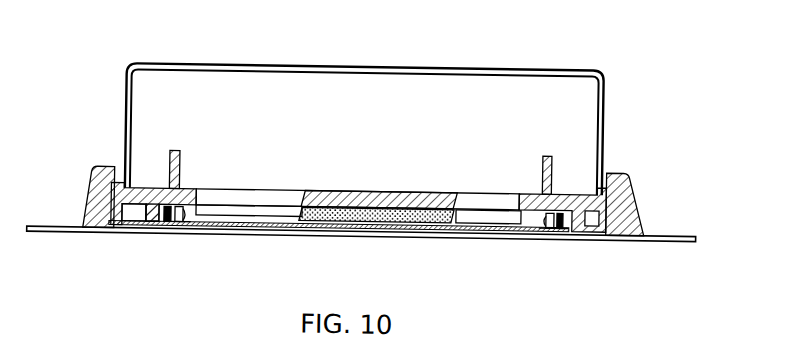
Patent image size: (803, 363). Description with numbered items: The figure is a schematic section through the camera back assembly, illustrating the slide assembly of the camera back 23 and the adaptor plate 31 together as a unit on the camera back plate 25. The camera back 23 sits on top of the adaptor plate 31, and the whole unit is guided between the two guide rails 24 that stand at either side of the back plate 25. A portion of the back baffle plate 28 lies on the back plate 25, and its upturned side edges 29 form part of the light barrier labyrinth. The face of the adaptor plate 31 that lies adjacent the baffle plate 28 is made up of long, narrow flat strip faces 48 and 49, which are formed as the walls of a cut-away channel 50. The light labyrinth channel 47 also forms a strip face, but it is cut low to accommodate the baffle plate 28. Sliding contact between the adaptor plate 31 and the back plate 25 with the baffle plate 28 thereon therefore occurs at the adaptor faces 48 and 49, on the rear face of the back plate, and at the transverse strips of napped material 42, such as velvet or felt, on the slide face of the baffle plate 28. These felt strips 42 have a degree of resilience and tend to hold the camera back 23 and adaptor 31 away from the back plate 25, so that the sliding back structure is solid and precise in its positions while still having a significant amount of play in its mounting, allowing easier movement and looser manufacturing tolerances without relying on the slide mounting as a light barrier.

The camera back 23 is at (220, 67).
The guide rails 24 is at (103, 171).
The camera back plate 25 is at (670, 231).
The back baffle plate 28 is at (428, 229).
The upturned side edges 29 is at (560, 226).
The adaptor plate 31 is at (268, 192).
The napped material 42 is at (338, 226).
The light labyrinth channel 47 is at (186, 228).
The flat strip face 48 is at (117, 230).
The flat strip face 49 is at (150, 231).
The cut-away channel 50 is at (126, 234).